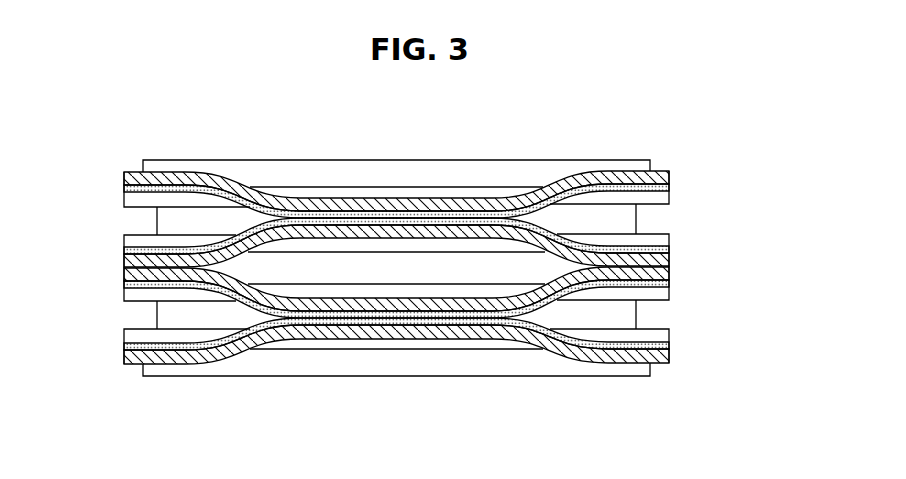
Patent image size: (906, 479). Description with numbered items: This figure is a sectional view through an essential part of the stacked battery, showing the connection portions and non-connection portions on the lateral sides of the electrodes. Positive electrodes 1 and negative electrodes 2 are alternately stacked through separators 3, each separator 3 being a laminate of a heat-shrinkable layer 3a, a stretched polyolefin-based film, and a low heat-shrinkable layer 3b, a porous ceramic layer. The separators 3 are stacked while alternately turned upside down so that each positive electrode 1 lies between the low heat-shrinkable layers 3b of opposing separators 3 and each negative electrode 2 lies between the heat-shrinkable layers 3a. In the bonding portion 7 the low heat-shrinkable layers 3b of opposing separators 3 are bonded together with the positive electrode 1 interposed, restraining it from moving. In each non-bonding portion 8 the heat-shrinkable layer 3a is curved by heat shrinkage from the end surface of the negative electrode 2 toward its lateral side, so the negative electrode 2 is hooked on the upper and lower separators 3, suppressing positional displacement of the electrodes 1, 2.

The positive electrode 1 is at (173, 223).
The negative electrode 2 is at (142, 168).
The separator 3 is at (449, 257).
The heat-shrinkable layer 3a is at (663, 168).
The low heat-shrinkable layer 3b is at (670, 188).
The bonding portion 7 is at (405, 196).
The non-bonding portion 8 is at (207, 170).